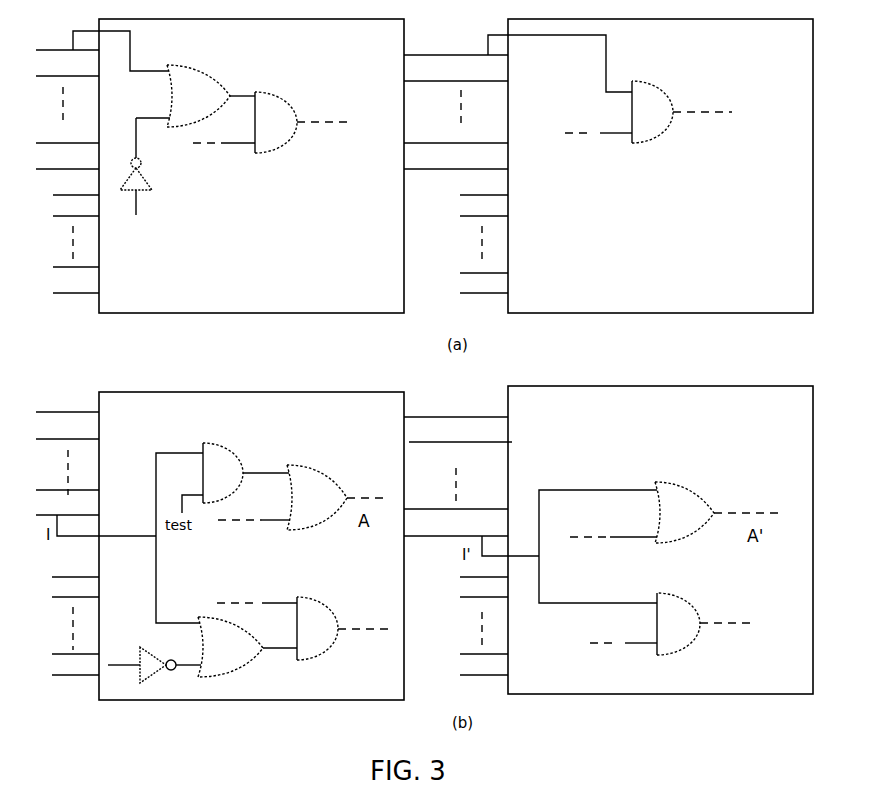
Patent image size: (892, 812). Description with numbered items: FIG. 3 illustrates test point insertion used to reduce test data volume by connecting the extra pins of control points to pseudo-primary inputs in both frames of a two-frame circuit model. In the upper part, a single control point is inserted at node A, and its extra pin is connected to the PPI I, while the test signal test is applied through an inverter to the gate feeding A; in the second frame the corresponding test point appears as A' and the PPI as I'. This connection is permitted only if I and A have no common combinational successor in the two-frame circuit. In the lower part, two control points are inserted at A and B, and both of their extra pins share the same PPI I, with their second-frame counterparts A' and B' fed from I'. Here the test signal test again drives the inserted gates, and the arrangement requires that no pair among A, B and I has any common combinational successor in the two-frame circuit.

The PPI I is at (104, 47).
The PPI in the second frame I' is at (544, 63).
The test point node A is at (271, 129).
The test point node in the second frame A' is at (648, 112).
The second test point node B is at (249, 640).
The second test point node in the second frame B' is at (671, 628).
The test signal test is at (145, 174).